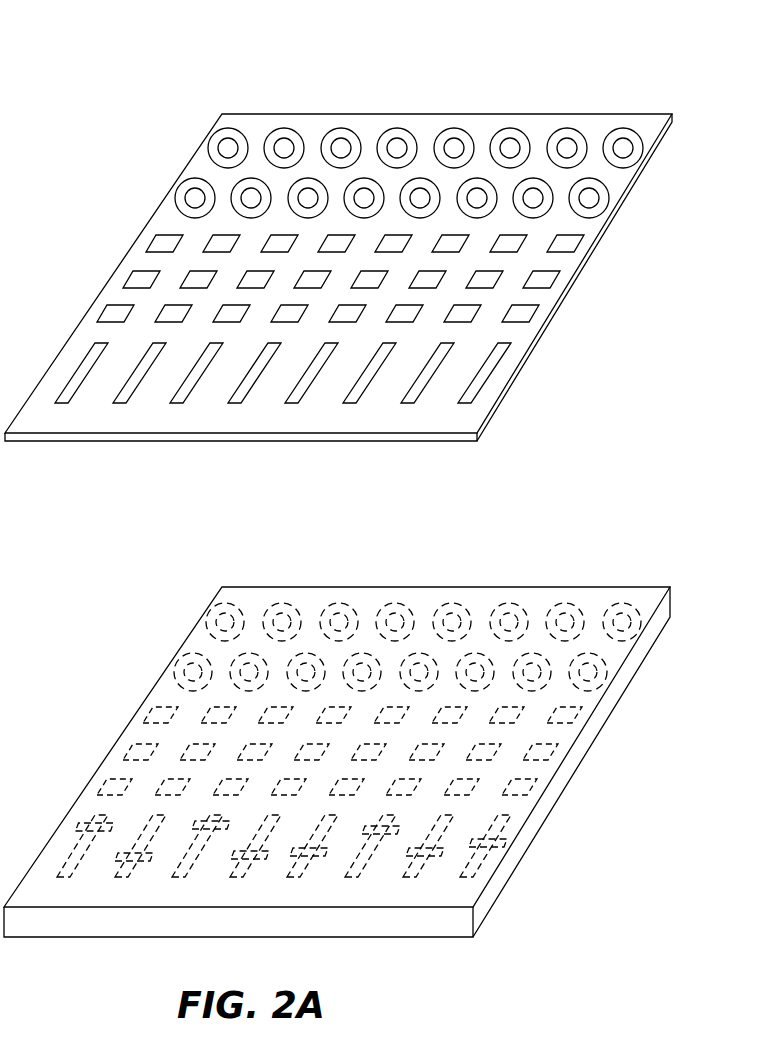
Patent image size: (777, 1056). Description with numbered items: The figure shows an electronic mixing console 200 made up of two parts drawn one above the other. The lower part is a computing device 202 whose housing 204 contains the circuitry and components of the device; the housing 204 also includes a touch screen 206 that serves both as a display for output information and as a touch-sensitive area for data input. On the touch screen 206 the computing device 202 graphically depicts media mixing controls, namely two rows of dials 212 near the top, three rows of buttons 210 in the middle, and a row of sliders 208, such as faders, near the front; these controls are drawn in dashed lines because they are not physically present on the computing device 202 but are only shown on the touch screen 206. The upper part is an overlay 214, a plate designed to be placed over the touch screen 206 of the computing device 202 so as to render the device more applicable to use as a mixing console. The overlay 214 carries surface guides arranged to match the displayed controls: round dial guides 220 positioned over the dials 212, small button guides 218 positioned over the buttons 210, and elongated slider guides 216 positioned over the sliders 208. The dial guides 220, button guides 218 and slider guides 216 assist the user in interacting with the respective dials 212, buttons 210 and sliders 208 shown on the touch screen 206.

The electronic mixing console 200 is at (446, 76).
The overlay 214 is at (146, 198).
The dial guides 220 is at (512, 130).
The button guides 218 is at (582, 232).
The slider guides 216 is at (475, 393).
The computing device 202 is at (144, 671).
The touch screen 206 is at (212, 593).
The housing 204 is at (112, 920).
The dials 212 is at (632, 616).
The buttons 210 is at (528, 773).
The sliders 208 is at (483, 867).